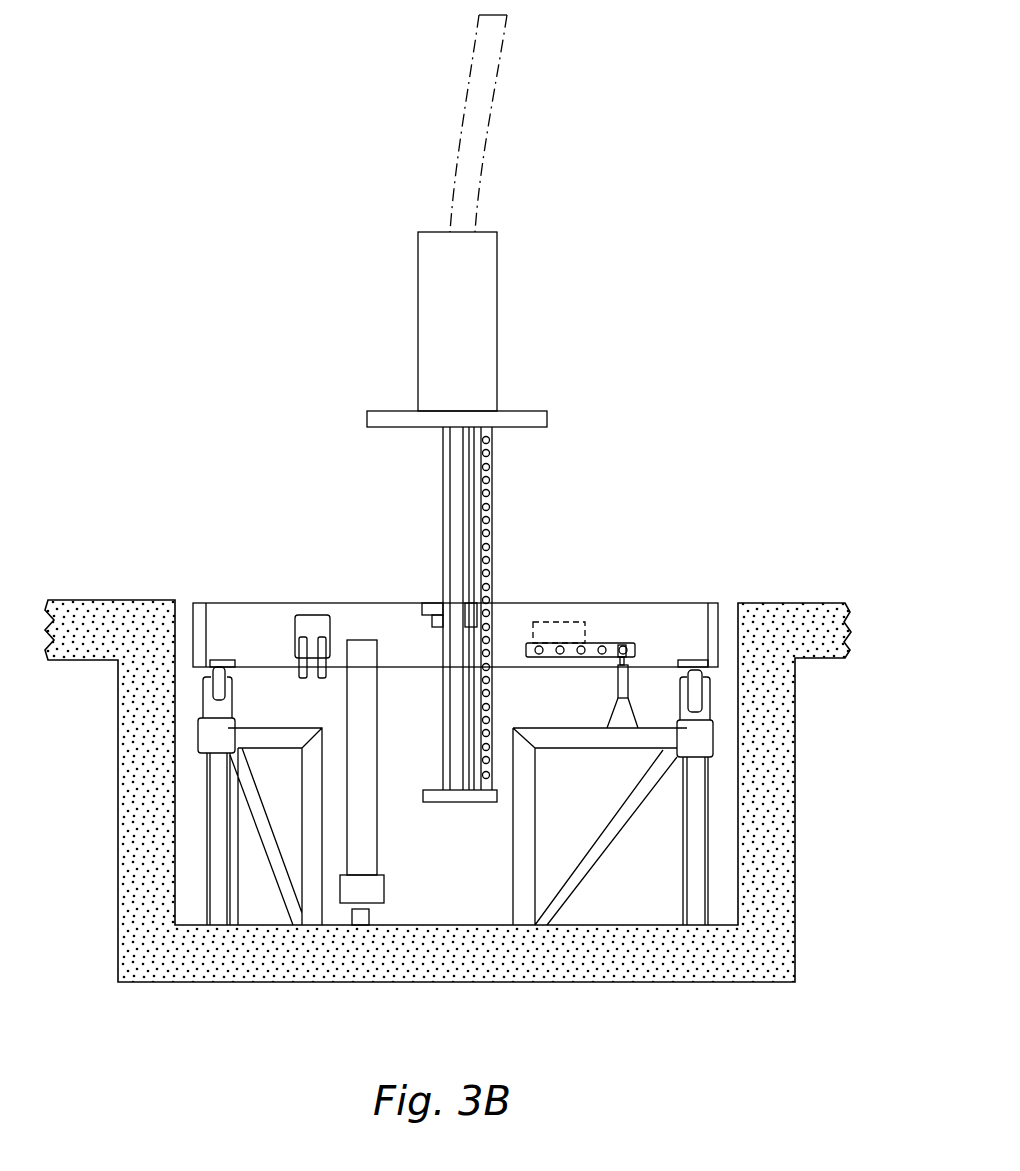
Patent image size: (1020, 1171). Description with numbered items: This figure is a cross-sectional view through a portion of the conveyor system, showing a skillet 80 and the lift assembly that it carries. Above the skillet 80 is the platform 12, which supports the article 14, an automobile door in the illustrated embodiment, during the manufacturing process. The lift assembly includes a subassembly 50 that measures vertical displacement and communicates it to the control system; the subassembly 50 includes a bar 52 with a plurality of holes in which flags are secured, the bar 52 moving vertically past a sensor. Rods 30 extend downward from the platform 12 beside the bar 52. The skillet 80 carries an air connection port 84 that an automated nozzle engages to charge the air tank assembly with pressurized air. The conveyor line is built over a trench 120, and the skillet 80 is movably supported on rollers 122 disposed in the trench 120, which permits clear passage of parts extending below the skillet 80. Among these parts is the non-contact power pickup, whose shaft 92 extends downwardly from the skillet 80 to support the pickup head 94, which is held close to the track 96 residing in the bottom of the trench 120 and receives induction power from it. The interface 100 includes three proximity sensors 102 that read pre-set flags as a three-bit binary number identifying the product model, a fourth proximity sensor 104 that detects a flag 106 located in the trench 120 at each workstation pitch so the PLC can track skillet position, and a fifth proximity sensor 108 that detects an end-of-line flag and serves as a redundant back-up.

The platform 12 is at (522, 423).
The article 14 is at (470, 102).
The mast rod 30 is at (443, 500).
The subassembly 50 is at (638, 507).
The bar 52 is at (486, 493).
The skillet 80 is at (250, 602).
The air connection port 84 is at (310, 627).
The shaft 92 is at (363, 809).
The pickup head 94 is at (370, 887).
The track 96 is at (365, 917).
The interface 100 is at (660, 626).
The proximity sensors 102 is at (565, 622).
The fourth proximity sensor 104 is at (623, 643).
The flag 106 is at (613, 676).
The fifth proximity sensor 108 is at (602, 643).
The trench 120 is at (727, 855).
The rollers 122 is at (222, 684).